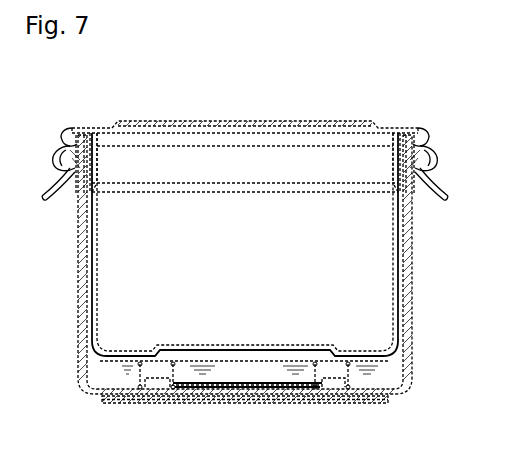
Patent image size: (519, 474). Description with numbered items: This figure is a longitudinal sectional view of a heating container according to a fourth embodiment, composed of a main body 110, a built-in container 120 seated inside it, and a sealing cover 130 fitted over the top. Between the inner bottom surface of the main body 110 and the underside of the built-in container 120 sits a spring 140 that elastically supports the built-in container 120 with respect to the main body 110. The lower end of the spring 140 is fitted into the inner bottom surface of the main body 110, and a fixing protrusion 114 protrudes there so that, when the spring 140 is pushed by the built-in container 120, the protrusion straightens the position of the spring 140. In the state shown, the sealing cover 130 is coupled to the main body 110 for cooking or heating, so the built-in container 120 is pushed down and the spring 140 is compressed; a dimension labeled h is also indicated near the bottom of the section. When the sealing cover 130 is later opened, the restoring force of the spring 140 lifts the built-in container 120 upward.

The main body 110 is at (412, 335).
The built-in container 120 is at (402, 270).
The sealing cover 130 is at (313, 120).
The fixing protrusion 114 is at (332, 390).
The spring 140 is at (348, 390).
The heater h is at (237, 390).